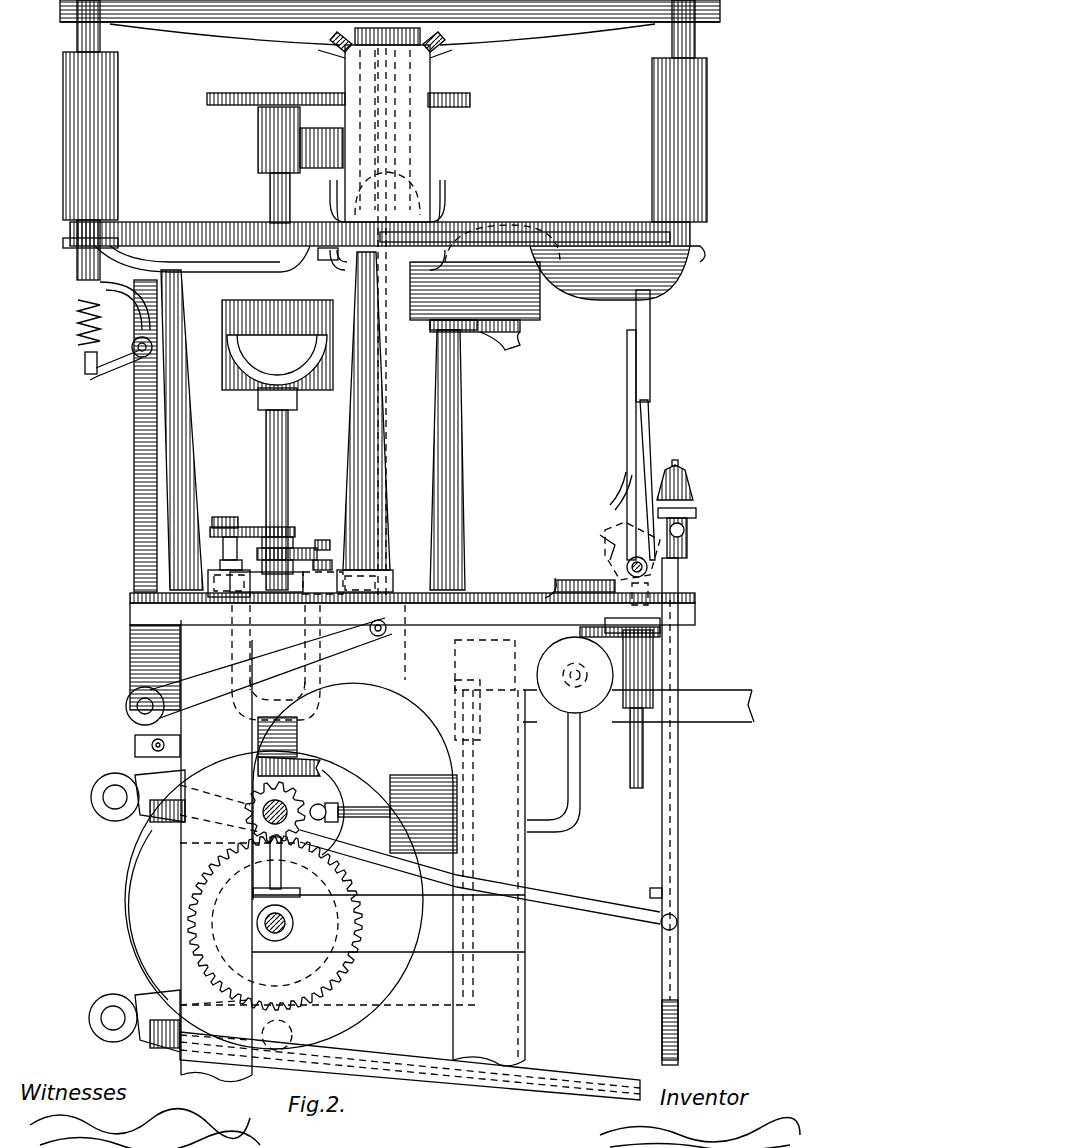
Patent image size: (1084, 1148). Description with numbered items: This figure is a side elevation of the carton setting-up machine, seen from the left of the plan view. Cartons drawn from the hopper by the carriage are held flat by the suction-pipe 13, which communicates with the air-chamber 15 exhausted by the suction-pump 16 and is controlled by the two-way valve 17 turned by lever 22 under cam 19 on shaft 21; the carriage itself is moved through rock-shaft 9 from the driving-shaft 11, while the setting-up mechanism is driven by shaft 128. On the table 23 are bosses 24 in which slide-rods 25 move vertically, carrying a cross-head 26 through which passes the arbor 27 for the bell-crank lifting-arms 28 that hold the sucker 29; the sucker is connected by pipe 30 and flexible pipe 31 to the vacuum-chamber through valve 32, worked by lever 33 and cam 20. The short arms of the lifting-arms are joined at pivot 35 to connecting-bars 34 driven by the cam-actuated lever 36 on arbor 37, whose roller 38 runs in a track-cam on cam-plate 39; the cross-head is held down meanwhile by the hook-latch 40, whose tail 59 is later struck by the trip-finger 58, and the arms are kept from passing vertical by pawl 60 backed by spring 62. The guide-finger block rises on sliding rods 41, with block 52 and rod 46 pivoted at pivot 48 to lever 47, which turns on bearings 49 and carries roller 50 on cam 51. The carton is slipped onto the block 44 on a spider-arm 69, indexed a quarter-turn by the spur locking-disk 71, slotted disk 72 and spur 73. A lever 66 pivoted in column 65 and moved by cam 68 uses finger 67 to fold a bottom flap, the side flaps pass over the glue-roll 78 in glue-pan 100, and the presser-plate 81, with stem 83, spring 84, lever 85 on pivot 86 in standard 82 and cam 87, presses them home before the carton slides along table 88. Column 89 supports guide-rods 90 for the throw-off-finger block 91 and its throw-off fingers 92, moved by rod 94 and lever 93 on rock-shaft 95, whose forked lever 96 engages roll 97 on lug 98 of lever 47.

The rock-shaft 9 is at (480, 752).
The driving-shaft 11 is at (296, 923).
The suction-pipe 13 is at (500, 600).
The air-chamber 15 is at (580, 700).
The suction-pump 16 is at (420, 780).
The two-way valve 17 is at (208, 582).
The cam 19 is at (255, 527).
The cam 20 is at (302, 548).
The shaft 21 is at (288, 462).
The lever 22 is at (214, 516).
The table 23 is at (535, 598).
The bosses 24 is at (653, 668).
The slide-rods 25 is at (635, 770).
The cross-head 26 is at (650, 576).
The arbor 27 is at (648, 565).
The lifting-arms 28 is at (645, 455).
The sucker 29 is at (650, 345).
The pipe 30 is at (636, 418).
The flexible pipe 31 is at (375, 600).
The valve 32 is at (268, 596).
The lever 33 is at (326, 540).
The connecting-bars 34 is at (678, 958).
The pivot 35 is at (686, 528).
The cam-actuated lever 36 is at (560, 1075).
The arbor 37 is at (110, 1015).
The roller 38 is at (284, 1032).
The cam-plate 39 is at (124, 903).
The hook-latch 40 is at (600, 600).
The sliding rods 41 is at (678, 826).
The block 44 is at (100, 132).
The rod 46 is at (678, 796).
The lever 47 is at (565, 890).
The pivot 48 is at (677, 920).
The bearings 49 is at (105, 802).
The roller 50 is at (212, 858).
The cam 51 is at (145, 940).
The block 52 is at (695, 500).
The trip-finger 58 is at (655, 888).
The tail 59 is at (660, 630).
The pawl 60 is at (605, 535).
The spring 62 is at (615, 505).
The column 65 is at (352, 410).
The lever 66 is at (545, 232).
The finger 67 is at (690, 246).
The cam 68 is at (335, 260).
The spider-arm 69 is at (155, 22).
The spur locking-disk 71 is at (225, 92).
The slotted disk 72 is at (455, 108).
The spur 73 is at (312, 92).
The glue-roll 78 is at (460, 232).
The presser-plate 81 is at (63, 242).
The standard 82 is at (133, 443).
The stem 83 is at (85, 357).
The spring 84 is at (78, 302).
The lever 85 is at (122, 368).
The pivot 86 is at (132, 347).
The cam 87 is at (262, 300).
The table 88 is at (165, 222).
The column 89 is at (450, 432).
The guide-rods 90 is at (410, 138).
The throw-off-finger block 91 is at (345, 55).
The throw-off fingers 92 is at (328, 40).
The lever 93 is at (271, 668).
The rod 94 is at (388, 490).
The rock-shaft 95 is at (140, 705).
The forked lever 96 is at (135, 740).
The roll 97 is at (152, 747).
The lug 98 is at (135, 775).
The glue-pan 100 is at (560, 318).
The shaft 128 is at (310, 790).